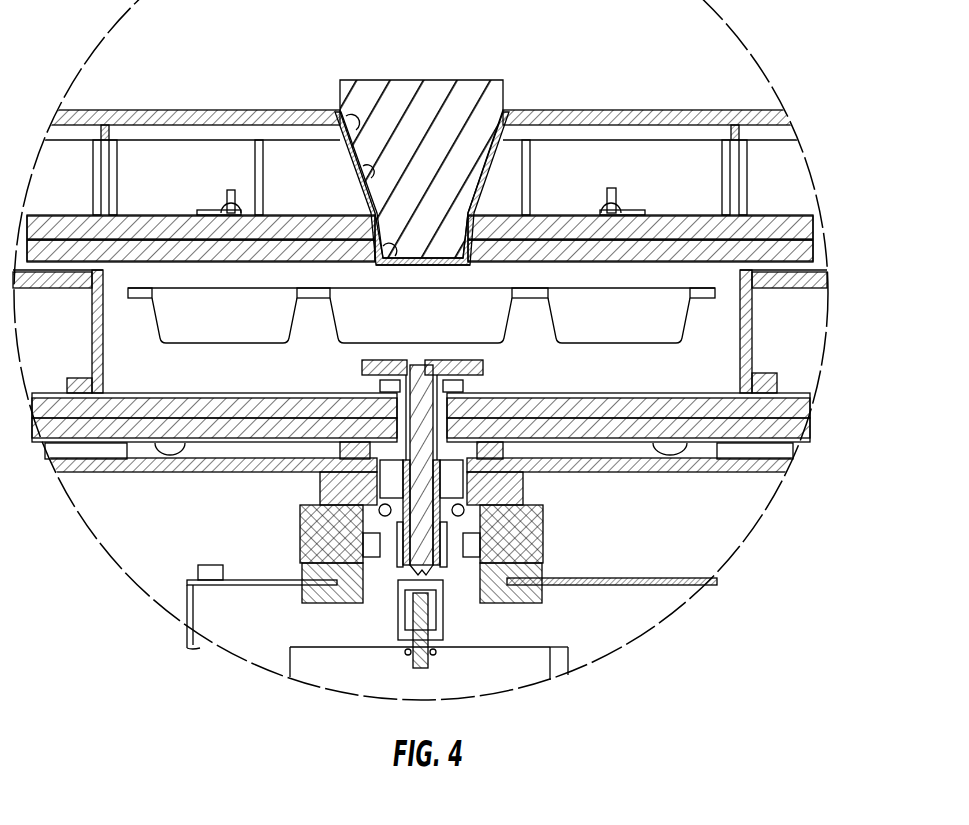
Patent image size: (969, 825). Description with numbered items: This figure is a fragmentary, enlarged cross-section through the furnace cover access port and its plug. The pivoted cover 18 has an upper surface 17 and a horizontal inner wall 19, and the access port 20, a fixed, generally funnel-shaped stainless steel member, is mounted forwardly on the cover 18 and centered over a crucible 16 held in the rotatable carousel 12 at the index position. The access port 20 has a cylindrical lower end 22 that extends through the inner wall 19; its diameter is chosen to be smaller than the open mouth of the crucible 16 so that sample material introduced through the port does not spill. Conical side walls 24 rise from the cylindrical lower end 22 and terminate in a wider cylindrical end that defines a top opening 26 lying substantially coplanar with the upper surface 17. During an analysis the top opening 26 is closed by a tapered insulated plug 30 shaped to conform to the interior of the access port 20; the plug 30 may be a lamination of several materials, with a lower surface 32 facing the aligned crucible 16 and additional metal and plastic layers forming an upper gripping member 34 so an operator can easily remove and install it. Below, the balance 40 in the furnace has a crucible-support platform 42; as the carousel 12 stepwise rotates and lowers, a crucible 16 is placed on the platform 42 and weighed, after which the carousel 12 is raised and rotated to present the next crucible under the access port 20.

The carousel 12 is at (703, 298).
The crucible 16 is at (373, 333).
The upper surface of cover 17 is at (605, 110).
The cover 18 is at (724, 90).
The horizontal inner wall 19 is at (190, 247).
The access port 20 is at (498, 166).
The cylindrical lower end 22 is at (400, 266).
The conical side walls 24 is at (370, 178).
The top opening 26 is at (353, 122).
The insulated plug 30 is at (452, 80).
The lower surface 32 is at (437, 266).
The upper gripping member 34 is at (507, 93).
The balance 40 is at (564, 564).
The crucible-support platform 42 is at (467, 355).